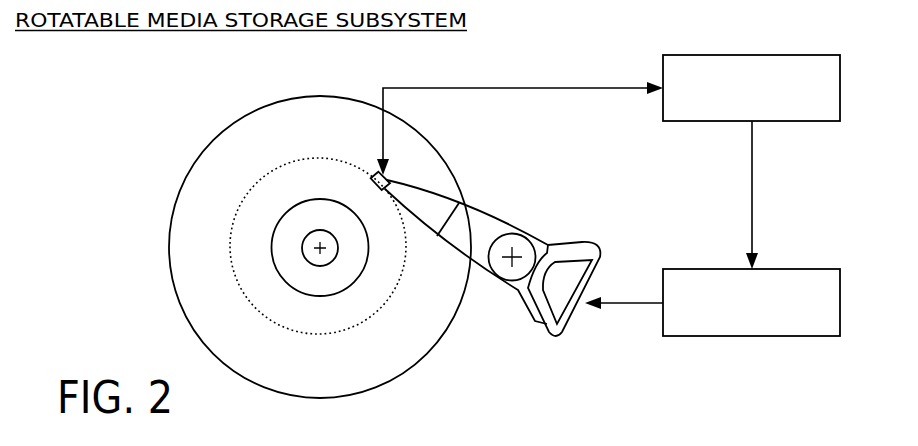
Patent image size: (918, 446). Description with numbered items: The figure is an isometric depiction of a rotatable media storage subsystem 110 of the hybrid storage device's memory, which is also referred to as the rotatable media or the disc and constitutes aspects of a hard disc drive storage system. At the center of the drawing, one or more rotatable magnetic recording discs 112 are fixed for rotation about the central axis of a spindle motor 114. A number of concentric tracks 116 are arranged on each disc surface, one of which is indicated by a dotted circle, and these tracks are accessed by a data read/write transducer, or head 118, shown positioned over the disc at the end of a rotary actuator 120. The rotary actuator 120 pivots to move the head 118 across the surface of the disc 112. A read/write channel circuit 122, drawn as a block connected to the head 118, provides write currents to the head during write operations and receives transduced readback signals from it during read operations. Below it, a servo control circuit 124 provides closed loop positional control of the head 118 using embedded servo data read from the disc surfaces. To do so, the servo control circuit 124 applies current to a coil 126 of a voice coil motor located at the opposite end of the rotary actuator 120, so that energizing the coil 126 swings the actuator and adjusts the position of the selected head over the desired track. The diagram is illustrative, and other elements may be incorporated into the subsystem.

The rotatable media storage subsystem 110 is at (195, 86).
The rotatable magnetic recording disc 112 is at (203, 290).
The spindle motor 114 is at (323, 217).
The concentric tracks 116 is at (323, 333).
The data read/write transducer (head) 118 is at (371, 176).
The rotary actuator 120 is at (549, 212).
The read/write (R/W) channel circuit 122 is at (752, 54).
The servo control circuit 124 is at (788, 268).
The coil of a voice coil motor (VCM) 126 is at (594, 249).